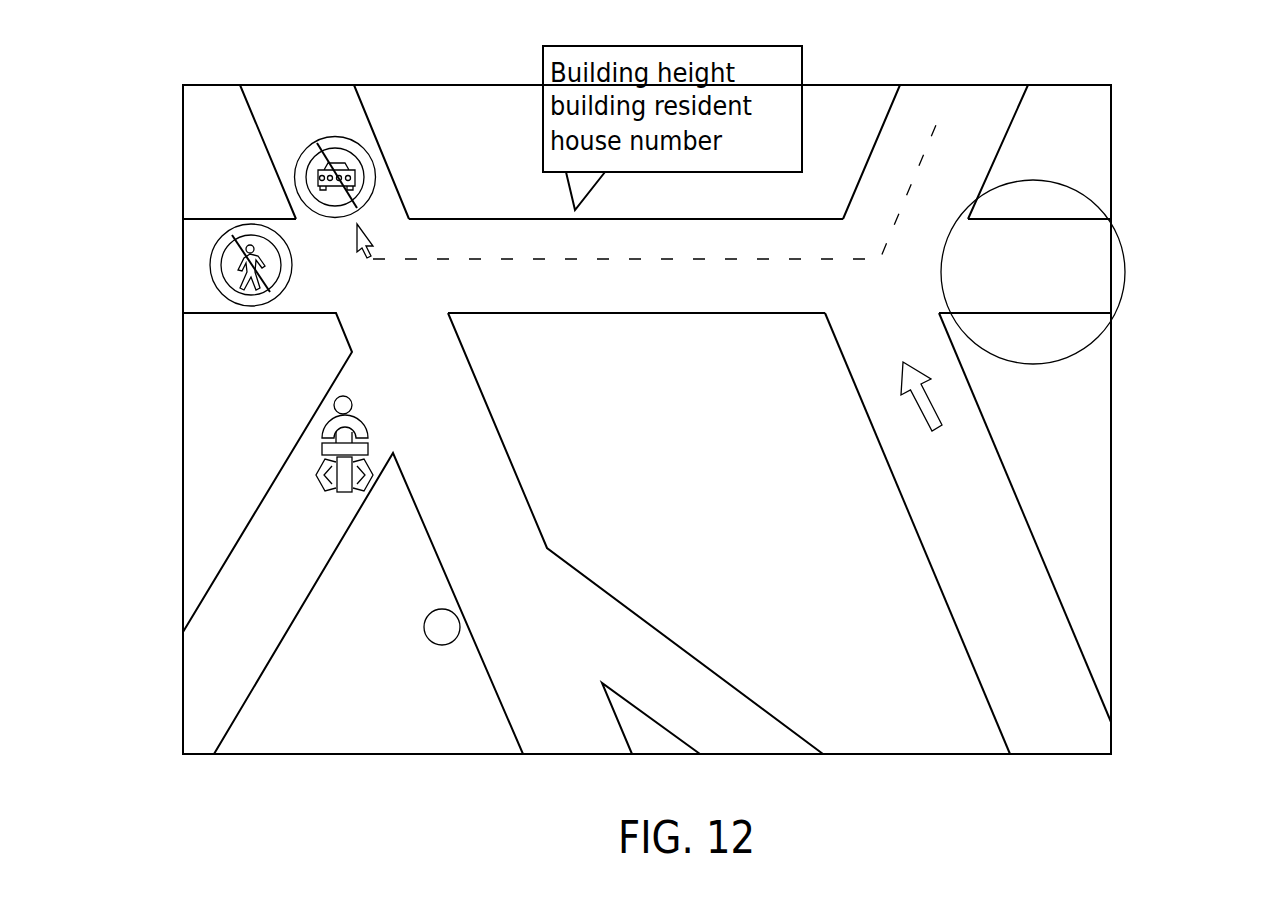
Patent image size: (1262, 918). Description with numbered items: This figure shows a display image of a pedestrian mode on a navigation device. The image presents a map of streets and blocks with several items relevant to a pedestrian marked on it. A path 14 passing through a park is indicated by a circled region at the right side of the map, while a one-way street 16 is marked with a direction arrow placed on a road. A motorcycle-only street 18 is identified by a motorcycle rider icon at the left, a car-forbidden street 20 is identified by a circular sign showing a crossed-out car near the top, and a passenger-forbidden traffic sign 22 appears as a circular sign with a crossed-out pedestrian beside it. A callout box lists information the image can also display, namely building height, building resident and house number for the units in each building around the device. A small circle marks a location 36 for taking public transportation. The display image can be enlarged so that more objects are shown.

The path passing through a park 14 is at (1125, 272).
The one-way street 16 is at (953, 407).
The motorcycle-only street 18 is at (312, 438).
The car-forbidden street 20 is at (338, 137).
The passenger-forbidden traffic sign 22 is at (210, 265).
The location for taking public transportation 36 is at (435, 628).